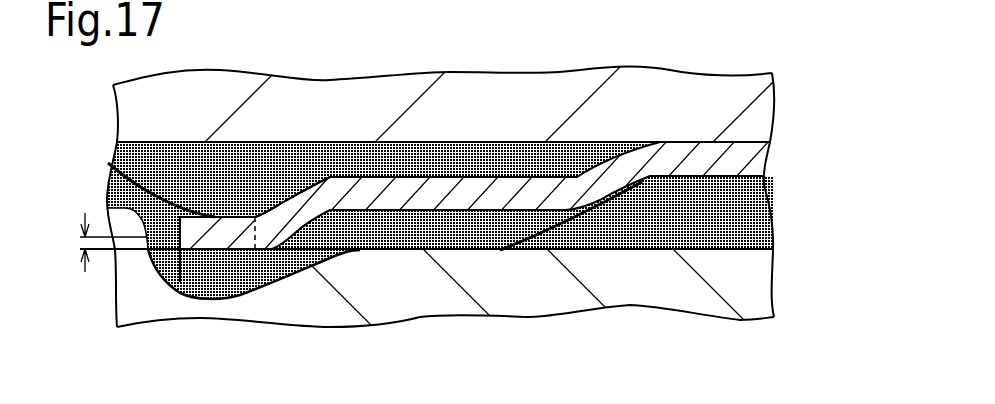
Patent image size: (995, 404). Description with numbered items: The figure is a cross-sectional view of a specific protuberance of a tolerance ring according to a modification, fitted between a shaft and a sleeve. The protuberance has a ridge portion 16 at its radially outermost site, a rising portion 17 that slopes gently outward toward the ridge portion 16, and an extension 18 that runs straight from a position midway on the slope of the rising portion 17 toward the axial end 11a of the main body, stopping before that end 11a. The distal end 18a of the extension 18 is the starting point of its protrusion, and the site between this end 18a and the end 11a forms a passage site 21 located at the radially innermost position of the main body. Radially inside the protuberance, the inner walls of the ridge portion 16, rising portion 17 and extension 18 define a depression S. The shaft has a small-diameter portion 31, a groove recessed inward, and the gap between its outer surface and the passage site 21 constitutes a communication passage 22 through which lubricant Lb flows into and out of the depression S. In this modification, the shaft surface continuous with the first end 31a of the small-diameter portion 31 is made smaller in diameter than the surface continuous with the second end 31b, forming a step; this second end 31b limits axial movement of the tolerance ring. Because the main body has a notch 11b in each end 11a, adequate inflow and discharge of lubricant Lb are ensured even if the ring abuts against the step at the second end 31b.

The end 11a is at (108, 166).
The notch 11b is at (253, 228).
The ridge portion 16 is at (745, 142).
The rising portion 17 is at (600, 167).
The extension 18 is at (413, 170).
The end of extension 18a is at (262, 208).
The passage site 21 is at (180, 217).
The communication passage 22 is at (246, 289).
The small-diameter portion 31 is at (277, 268).
The first end 31a is at (357, 249).
The second end 31b is at (108, 208).
The lubricant Lb is at (573, 240).
The depression S is at (655, 215).